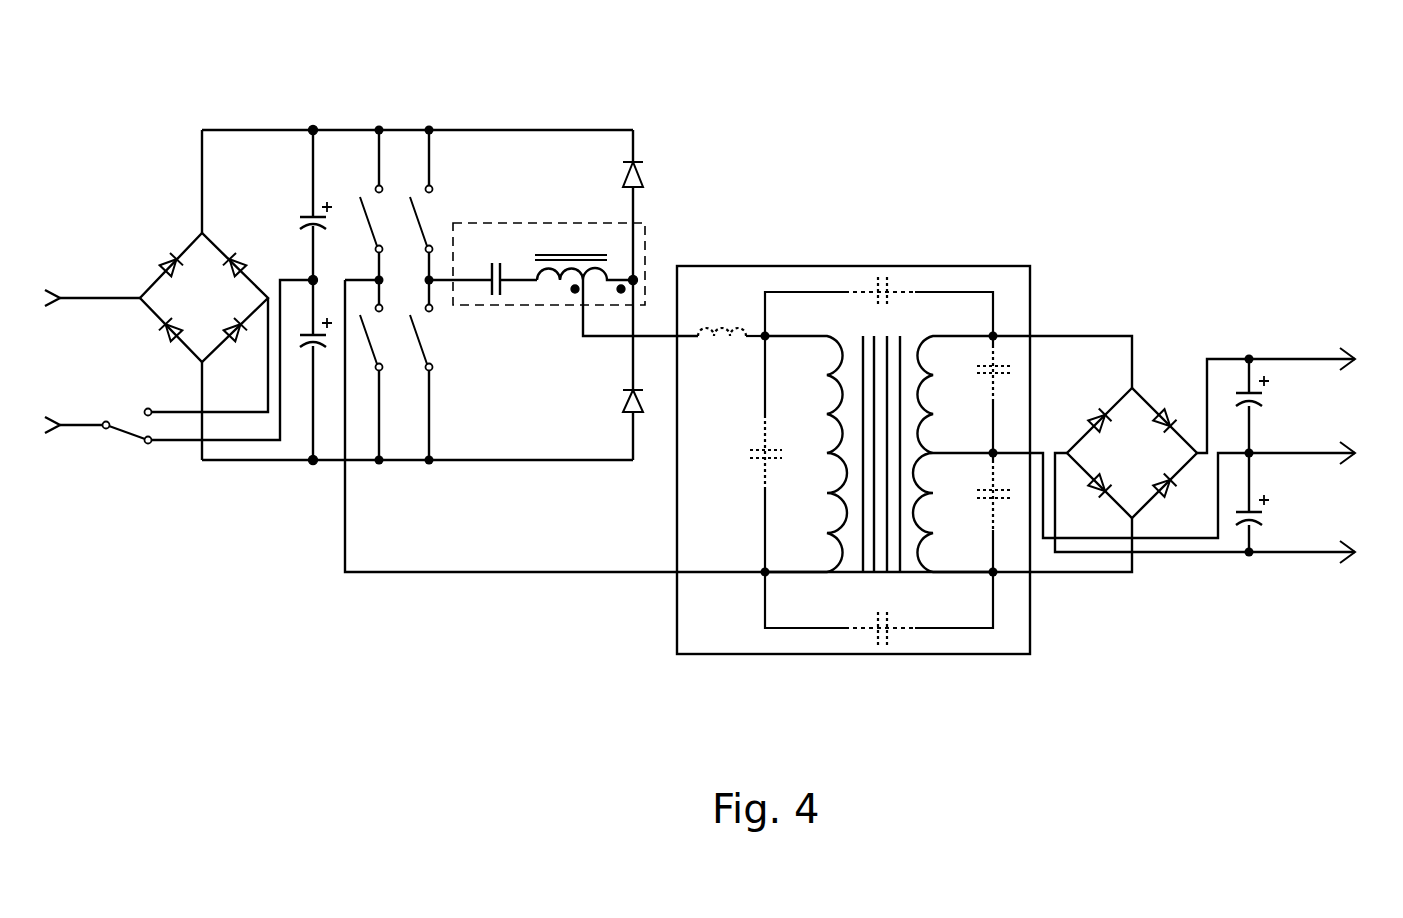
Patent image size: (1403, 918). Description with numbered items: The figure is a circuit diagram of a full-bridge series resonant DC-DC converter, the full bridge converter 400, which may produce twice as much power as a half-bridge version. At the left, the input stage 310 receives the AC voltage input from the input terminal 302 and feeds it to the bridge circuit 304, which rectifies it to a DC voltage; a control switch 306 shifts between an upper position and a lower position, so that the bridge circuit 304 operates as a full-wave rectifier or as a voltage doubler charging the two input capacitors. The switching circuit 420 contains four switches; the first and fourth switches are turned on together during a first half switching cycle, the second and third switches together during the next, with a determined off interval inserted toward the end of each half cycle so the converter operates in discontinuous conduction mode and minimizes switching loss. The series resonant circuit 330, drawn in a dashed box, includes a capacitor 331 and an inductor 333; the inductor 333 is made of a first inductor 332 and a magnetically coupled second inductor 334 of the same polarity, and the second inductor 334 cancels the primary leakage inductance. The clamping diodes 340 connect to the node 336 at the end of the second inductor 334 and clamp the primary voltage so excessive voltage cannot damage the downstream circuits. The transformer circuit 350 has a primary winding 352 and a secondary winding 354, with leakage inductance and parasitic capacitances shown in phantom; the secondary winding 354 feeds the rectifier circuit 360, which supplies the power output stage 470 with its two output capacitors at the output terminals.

The input terminal 302 is at (52, 293).
The bridge circuit 304 is at (159, 221).
The control switch 306 is at (53, 432).
The input stage 310 is at (318, 116).
The switching circuit 420 is at (375, 116).
The series resonant circuit 330 is at (637, 260).
The capacitor 331 is at (549, 276).
The first inductor 332 is at (546, 315).
The inductor 333 is at (571, 244).
The second inductor 334 is at (600, 328).
The node 336 is at (635, 274).
The clamping diodes 340 is at (665, 165).
The transformer circuit 350 is at (865, 442).
The primary winding 352 is at (713, 592).
The secondary winding 354 is at (1015, 543).
The rectifier circuit 360 is at (1145, 398).
The power output stage 470 is at (1250, 337).
The full bridge converter 400 is at (438, 757).